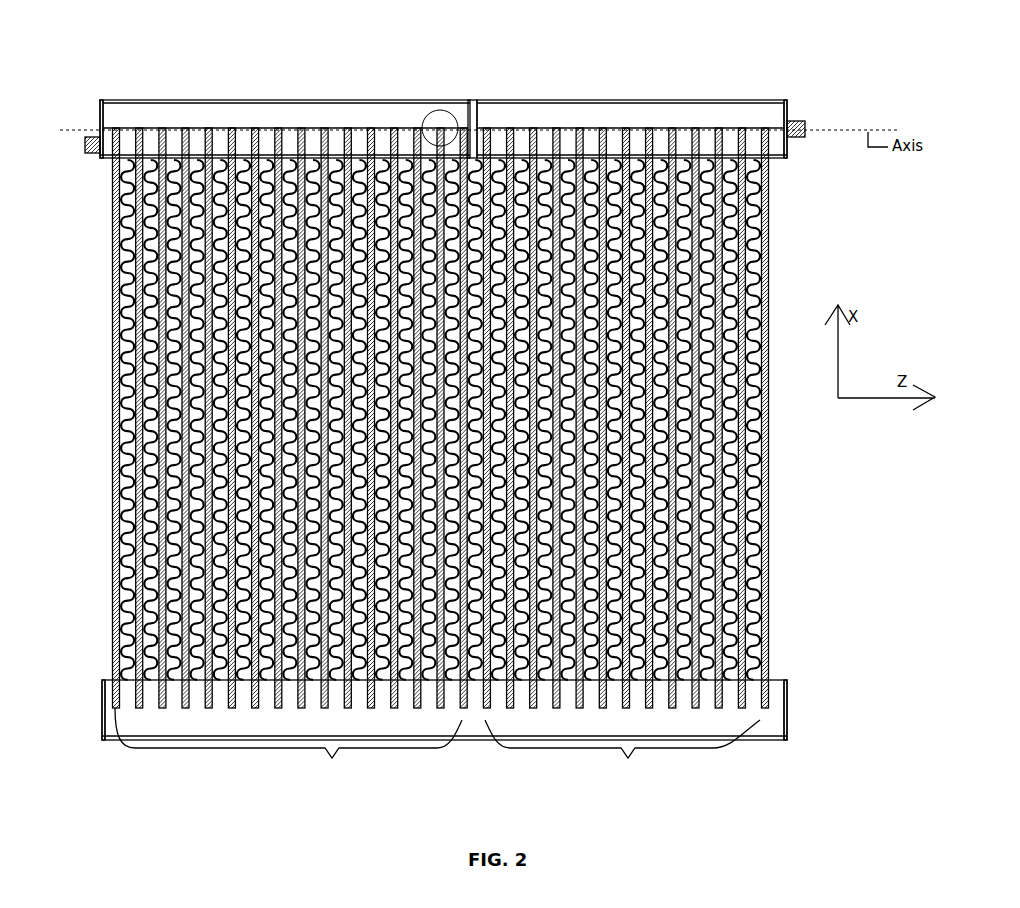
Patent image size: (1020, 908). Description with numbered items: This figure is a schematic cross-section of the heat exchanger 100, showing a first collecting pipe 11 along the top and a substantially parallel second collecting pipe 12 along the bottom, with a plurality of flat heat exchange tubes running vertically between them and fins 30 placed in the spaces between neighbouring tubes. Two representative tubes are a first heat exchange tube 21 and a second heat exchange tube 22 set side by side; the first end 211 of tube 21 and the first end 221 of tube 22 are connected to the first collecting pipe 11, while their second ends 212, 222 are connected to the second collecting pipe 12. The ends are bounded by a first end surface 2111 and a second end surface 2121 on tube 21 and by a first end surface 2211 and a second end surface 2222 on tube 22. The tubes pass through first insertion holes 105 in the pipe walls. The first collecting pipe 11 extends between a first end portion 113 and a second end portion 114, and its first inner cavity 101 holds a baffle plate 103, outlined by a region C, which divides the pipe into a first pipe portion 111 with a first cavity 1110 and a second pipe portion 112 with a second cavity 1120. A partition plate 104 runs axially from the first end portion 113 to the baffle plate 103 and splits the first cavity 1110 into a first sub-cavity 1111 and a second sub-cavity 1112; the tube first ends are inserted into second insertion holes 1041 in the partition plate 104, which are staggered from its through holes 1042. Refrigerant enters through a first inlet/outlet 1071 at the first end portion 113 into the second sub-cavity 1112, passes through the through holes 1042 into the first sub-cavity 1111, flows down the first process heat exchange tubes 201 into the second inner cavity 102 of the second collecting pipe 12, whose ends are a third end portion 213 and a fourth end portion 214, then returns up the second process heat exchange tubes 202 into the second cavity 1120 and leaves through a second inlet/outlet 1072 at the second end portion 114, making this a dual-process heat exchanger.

The heat exchanger 100 is at (85, 92).
The first inner cavity 101 is at (527, 63).
The second inner cavity 102 is at (763, 738).
The baffle plate 103 is at (466, 124).
The partition plate 104 is at (112, 233).
The first insertion holes 105 is at (120, 190).
The first collecting pipe 11 is at (787, 101).
The second collecting pipe 12 is at (472, 728).
The first pipe portion 111 is at (370, 108).
The second pipe portion 112 is at (667, 112).
The first end portion 113 is at (100, 118).
The second end portion 114 is at (787, 114).
The first cavity 1110 is at (218, 59).
The second cavity 1120 is at (522, 108).
The first sub-cavity 1111 is at (177, 113).
The second sub-cavity 1112 is at (200, 140).
The second insertion holes 1041 is at (140, 160).
The through holes 1042 is at (263, 130).
The first inlet/outlet 1071 is at (85, 145).
The second inlet/outlet 1072 is at (806, 132).
The first process heat exchange tubes 201 is at (288, 746).
The second process heat exchange tubes 202 is at (622, 748).
The first heat exchange tube 21 is at (115, 540).
The second heat exchange tube 22 is at (115, 503).
The fins 30 is at (113, 373).
The first end 211 is at (103, 142).
The second end 212 is at (112, 705).
The third end portion 213 is at (102, 728).
The fourth end portion 214 is at (787, 702).
The first end 221 is at (112, 173).
The second end 222 is at (137, 708).
The first end surface 2111 is at (117, 190).
The second end surface 2121 is at (115, 708).
The first end surface 2211 is at (138, 200).
The fin second end face 2222 is at (138, 708).
The detail region C is at (428, 112).